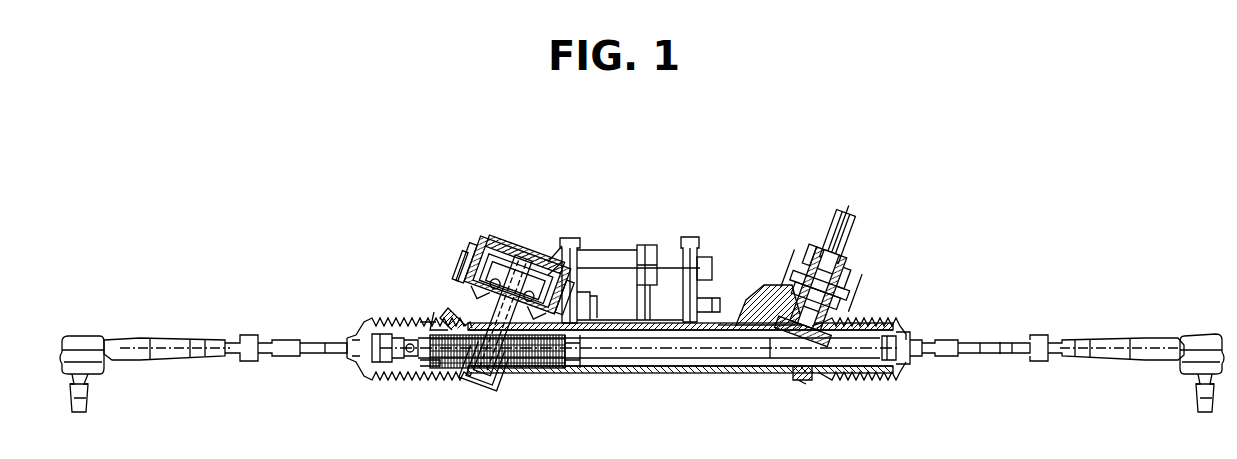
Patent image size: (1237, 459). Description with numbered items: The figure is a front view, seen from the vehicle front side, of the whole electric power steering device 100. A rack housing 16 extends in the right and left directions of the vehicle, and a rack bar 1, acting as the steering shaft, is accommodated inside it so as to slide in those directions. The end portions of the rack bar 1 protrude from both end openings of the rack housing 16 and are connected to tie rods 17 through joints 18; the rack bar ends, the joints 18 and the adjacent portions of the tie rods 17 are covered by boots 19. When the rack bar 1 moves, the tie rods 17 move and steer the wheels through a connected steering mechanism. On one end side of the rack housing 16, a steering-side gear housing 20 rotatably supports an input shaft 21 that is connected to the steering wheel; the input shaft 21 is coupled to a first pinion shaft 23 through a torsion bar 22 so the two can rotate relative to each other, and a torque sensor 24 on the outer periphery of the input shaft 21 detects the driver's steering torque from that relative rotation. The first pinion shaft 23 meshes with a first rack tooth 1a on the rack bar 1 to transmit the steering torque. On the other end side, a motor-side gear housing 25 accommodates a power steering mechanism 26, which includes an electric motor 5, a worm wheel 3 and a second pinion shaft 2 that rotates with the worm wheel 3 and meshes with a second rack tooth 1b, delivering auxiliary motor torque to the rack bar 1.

The electric power steering device 100 is at (718, 218).
The rack bar 1 is at (638, 352).
The first rack tooth 1a is at (770, 352).
The second rack tooth 1b is at (535, 374).
The second pinion shaft 2 is at (497, 388).
The worm wheel 3 is at (478, 256).
The electric motor 5 is at (650, 250).
The rack housing 16 is at (690, 373).
The tie rods 17 is at (972, 356).
The joints 18 is at (900, 378).
The boots 19 is at (904, 318).
The steering-side gear housing 20 is at (764, 295).
The input shaft 21 is at (846, 232).
The torsion bar 22 is at (820, 228).
The first pinion shaft 23 is at (800, 384).
The torque sensor 24 is at (845, 274).
The motor-side gear housing 25 is at (446, 308).
The power steering mechanism 26 is at (513, 246).